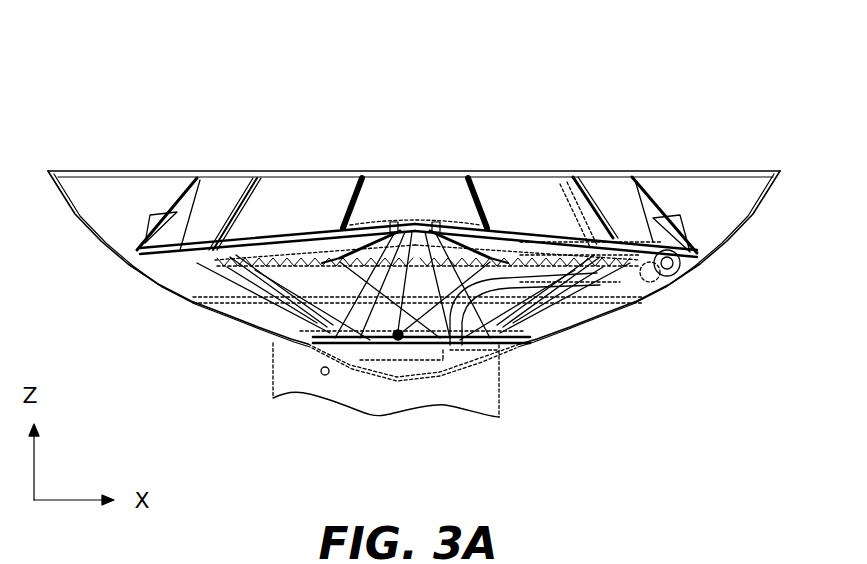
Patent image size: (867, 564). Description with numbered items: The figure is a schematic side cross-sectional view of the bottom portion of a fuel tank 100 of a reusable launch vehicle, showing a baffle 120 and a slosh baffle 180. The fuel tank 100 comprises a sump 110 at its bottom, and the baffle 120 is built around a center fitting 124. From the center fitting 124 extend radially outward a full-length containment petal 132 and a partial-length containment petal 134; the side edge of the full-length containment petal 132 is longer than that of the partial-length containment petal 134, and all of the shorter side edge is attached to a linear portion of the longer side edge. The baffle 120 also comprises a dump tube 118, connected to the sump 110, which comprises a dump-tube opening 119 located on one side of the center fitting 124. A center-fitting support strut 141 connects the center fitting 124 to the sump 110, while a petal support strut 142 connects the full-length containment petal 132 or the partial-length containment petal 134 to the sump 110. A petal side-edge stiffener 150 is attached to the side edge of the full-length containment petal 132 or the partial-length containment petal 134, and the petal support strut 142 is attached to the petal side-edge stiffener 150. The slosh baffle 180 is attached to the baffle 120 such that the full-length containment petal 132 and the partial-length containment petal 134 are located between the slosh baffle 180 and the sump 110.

The fuel tank 100 is at (722, 138).
The sump 110 is at (503, 383).
The dump tube 118 is at (600, 275).
The dump-tube opening 119 is at (693, 272).
The baffle 120 is at (622, 235).
The center fitting 124 is at (418, 222).
The full-length containment petal 132 is at (500, 200).
The partial-length containment petal 134 is at (275, 233).
The center-fitting support strut 141 is at (345, 305).
The petal support strut 142 is at (373, 215).
The petal side-edge stiffener 150 is at (230, 200).
The slosh baffle 180 is at (515, 195).